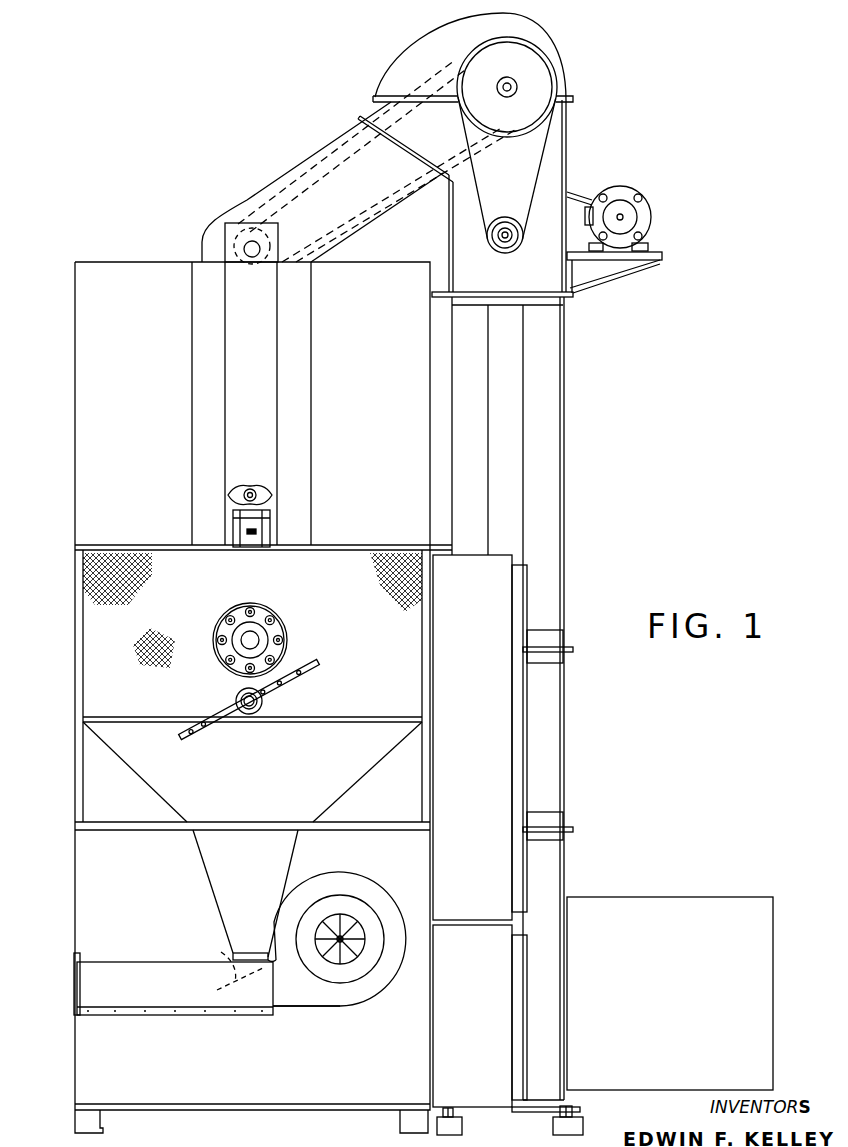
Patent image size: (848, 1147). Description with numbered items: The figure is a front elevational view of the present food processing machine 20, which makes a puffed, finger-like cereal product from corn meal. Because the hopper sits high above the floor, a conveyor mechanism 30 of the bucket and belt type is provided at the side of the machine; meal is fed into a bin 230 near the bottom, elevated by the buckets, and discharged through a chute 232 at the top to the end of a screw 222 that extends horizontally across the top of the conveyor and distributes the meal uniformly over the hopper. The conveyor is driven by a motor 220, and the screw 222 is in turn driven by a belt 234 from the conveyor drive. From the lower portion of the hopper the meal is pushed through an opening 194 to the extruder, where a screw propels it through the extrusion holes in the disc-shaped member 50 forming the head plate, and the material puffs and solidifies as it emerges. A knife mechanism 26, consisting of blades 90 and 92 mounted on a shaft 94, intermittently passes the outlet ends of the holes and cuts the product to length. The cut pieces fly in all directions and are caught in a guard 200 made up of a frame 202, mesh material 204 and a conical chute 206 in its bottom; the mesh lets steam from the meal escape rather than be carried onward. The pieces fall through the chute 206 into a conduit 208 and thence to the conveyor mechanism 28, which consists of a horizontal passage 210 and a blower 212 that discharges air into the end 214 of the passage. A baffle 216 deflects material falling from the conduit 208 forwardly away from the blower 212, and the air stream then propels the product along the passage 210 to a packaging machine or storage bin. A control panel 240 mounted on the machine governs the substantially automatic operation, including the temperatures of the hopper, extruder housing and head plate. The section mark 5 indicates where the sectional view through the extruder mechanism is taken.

The machine 20 is at (570, 527).
The conveyor mechanism 30 is at (557, 450).
The disc-shaped member 50 is at (282, 630).
The knife mechanism 26 is at (270, 694).
The blade 90 is at (223, 712).
The blade 92 is at (303, 680).
The shaft 94 is at (253, 705).
The opening 194 is at (257, 540).
The guard 200 is at (415, 707).
The frame 202 is at (76, 648).
The mesh material 204 is at (415, 598).
The conical chute 206 is at (373, 768).
The conduit 208 is at (220, 900).
The horizontal passage 210 is at (135, 995).
The blower 212 is at (367, 985).
The end 214 is at (275, 1005).
The baffle 216 is at (223, 956).
The motor 220 is at (648, 215).
The screw 222 is at (228, 247).
The bin 230 is at (755, 992).
The chute 232 is at (262, 193).
The belt 234 is at (315, 157).
The control panel 240 is at (457, 744).
The conveyor mechanism 28 is at (240, 1000).
The section line 5 is at (265, 591).